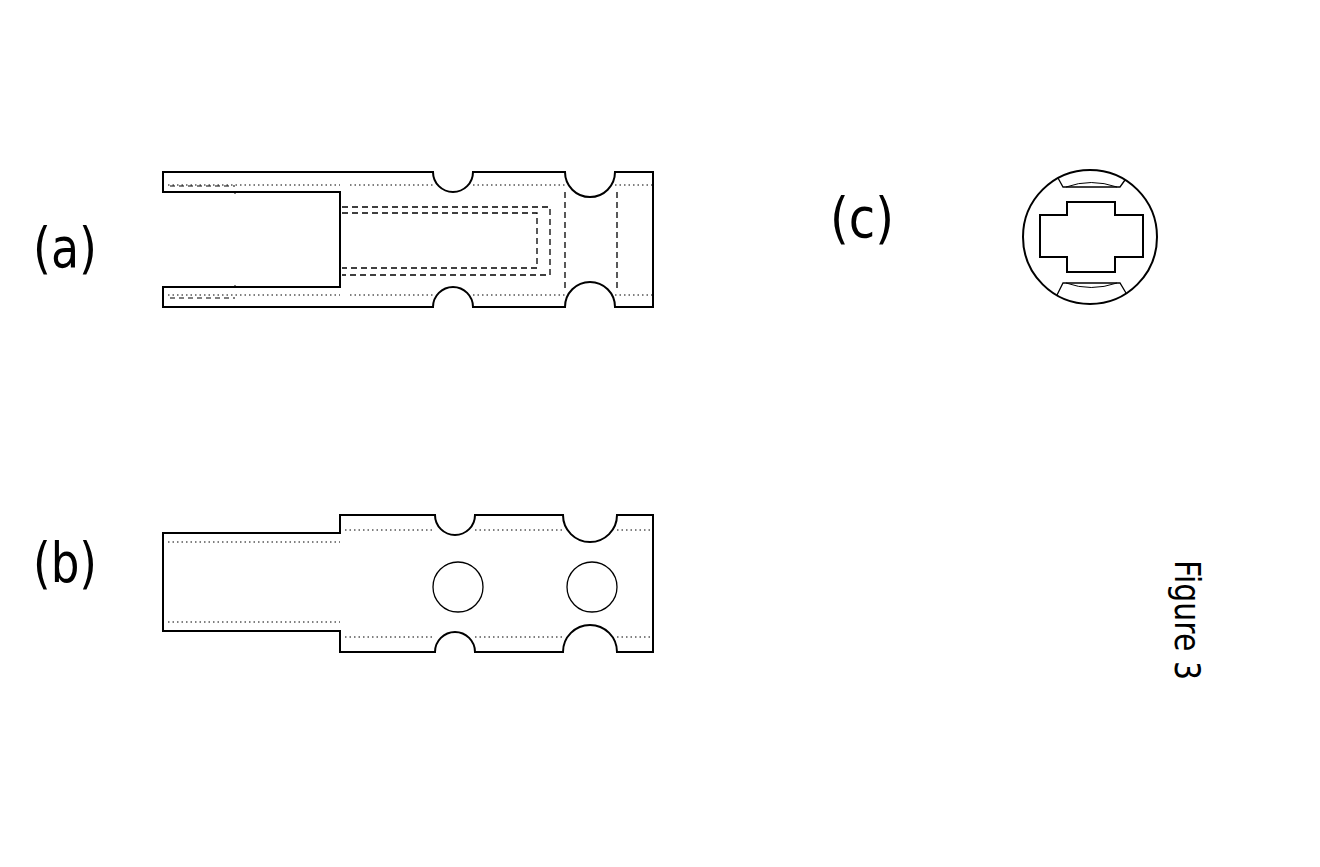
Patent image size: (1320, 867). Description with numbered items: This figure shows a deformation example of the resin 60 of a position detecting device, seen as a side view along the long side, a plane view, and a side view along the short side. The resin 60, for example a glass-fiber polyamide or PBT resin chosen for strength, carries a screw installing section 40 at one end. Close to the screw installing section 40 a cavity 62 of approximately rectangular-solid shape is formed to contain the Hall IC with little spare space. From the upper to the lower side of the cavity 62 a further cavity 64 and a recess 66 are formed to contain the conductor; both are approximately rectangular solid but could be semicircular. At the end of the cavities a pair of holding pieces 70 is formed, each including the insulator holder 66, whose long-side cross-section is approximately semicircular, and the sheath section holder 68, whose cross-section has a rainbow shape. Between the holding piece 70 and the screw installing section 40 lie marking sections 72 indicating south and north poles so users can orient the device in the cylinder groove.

The resin 60 is at (692, 139).
The holding piece 70 is at (272, 159).
The cavity 62 is at (398, 207).
The screw installing section 40 is at (592, 182).
The marking section 72 is at (462, 182).
The cavity 64 is at (373, 272).
The recess / insulator holder 66 is at (290, 193).
The sheath section holder 68 is at (185, 193).